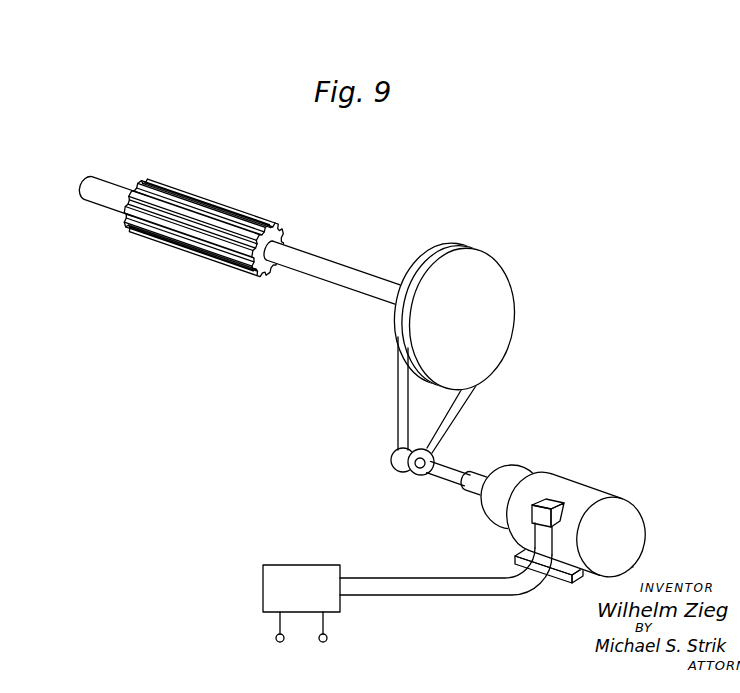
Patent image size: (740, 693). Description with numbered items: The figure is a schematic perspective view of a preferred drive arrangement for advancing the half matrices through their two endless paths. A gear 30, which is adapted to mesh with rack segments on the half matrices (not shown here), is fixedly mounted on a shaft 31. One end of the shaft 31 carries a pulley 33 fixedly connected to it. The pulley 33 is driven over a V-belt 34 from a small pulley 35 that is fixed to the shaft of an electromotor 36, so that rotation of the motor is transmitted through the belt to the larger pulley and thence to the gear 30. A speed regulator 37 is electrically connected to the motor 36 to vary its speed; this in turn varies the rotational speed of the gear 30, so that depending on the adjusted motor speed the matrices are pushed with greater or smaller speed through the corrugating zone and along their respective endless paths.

The gear 30 is at (178, 196).
The shaft 31 is at (340, 276).
The pulley 33 is at (481, 280).
The V-belt 34 is at (402, 402).
The small pulley 35 is at (397, 458).
The electromotor 36 is at (575, 492).
The speed regulator 37 is at (281, 587).